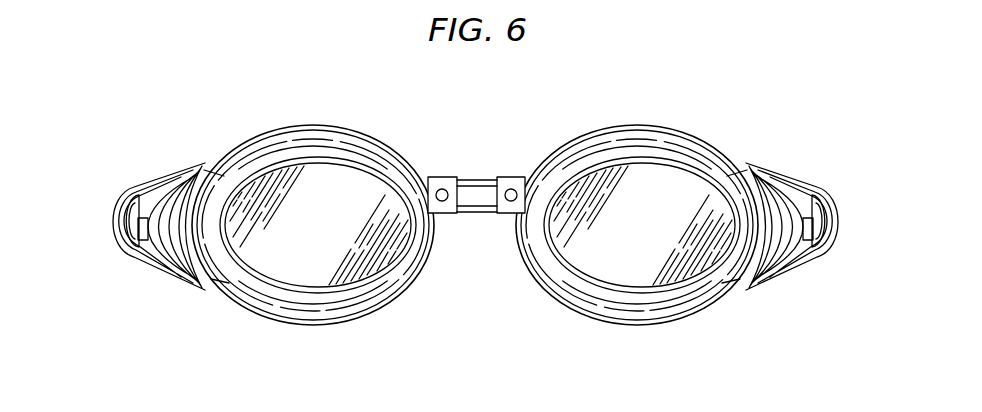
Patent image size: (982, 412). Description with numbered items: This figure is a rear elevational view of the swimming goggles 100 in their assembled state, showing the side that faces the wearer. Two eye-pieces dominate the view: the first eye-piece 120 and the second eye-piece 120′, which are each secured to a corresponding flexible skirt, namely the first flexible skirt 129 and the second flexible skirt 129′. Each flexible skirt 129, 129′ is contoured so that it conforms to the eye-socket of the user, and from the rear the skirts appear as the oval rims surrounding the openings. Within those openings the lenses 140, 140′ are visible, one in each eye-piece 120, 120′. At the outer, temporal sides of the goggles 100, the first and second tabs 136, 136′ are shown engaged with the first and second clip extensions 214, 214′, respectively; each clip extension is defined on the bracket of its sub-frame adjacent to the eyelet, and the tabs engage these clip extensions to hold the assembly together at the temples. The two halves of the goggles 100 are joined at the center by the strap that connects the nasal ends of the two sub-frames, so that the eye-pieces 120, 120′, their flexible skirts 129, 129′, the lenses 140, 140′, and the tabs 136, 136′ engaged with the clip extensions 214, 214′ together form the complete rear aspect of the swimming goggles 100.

The swimming goggles 100 is at (497, 84).
The first eye-piece 120 is at (538, 303).
The second eye-piece 120′ is at (321, 254).
The first flexible skirt 129 is at (730, 270).
The second flexible skirt 129′ is at (310, 257).
The lens 140 is at (643, 206).
The lens 140′ is at (319, 184).
The first clip extension 214 is at (823, 226).
The second clip extension 214′ is at (134, 226).
The first tab 136 is at (808, 262).
The second tab 136′ is at (145, 259).